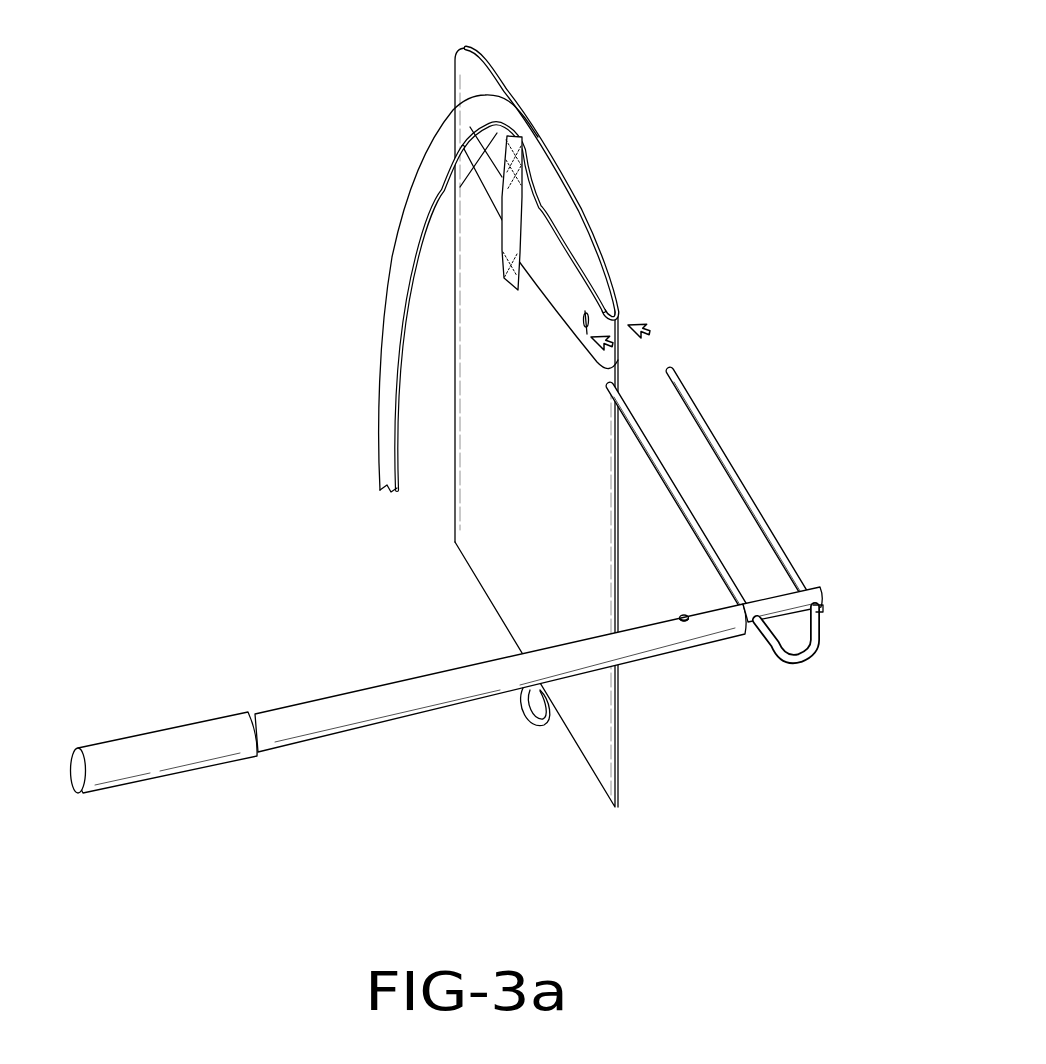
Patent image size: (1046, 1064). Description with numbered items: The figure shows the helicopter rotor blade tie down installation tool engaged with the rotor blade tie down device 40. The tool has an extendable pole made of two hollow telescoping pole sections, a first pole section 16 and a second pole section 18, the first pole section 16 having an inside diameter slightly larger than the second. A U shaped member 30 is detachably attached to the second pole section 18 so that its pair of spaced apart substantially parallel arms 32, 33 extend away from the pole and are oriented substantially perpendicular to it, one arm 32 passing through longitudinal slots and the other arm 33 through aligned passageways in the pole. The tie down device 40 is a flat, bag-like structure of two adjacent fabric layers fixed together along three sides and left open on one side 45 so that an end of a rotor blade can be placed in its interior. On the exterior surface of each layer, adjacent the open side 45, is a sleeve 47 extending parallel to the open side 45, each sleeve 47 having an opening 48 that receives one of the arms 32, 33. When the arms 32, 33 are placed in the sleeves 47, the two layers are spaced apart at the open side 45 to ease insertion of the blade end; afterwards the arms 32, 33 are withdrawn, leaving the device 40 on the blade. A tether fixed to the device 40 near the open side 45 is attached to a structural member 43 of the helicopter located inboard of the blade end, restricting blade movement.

The first pole section 16 is at (333, 727).
The second pole section 18 is at (813, 590).
The U shaped member 30 is at (748, 489).
The arm 32 is at (697, 407).
The arm 33 is at (667, 492).
The helicopter rotor blade tie down device 40 is at (453, 517).
The structural member 43 is at (508, 222).
The open side 45 is at (577, 247).
The sleeve 47 is at (543, 297).
The opening 48 is at (590, 313).